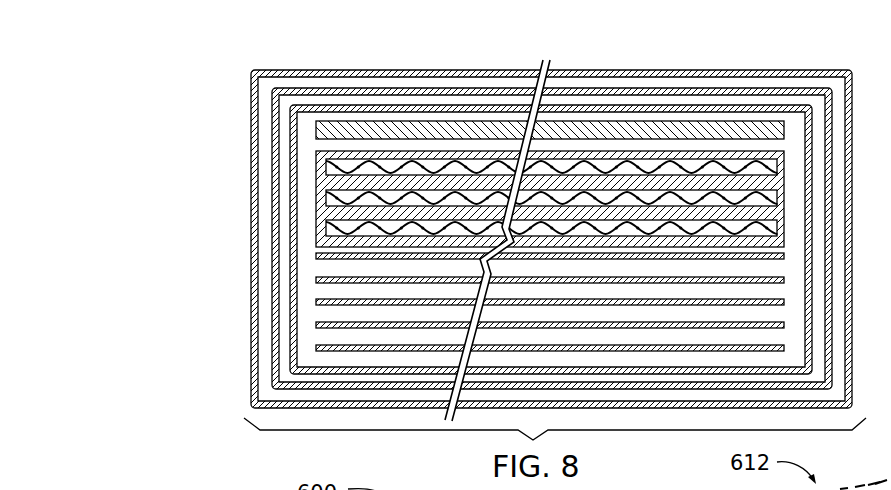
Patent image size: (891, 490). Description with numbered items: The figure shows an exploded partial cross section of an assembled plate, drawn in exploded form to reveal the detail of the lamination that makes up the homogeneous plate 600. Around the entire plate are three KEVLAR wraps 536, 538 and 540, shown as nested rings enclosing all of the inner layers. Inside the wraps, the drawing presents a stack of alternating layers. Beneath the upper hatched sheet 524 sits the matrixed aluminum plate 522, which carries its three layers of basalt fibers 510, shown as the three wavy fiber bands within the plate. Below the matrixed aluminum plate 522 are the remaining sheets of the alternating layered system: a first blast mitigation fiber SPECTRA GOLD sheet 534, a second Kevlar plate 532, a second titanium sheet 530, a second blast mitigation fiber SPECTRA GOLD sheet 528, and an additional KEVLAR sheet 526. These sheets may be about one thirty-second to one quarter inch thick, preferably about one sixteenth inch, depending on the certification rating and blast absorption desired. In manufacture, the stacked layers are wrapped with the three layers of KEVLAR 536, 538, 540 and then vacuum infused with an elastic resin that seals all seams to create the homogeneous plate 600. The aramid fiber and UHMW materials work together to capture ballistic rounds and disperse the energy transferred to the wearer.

The homogeneous plate 600 is at (502, 217).
The KEVLAR wrap 540 is at (487, 69).
The KEVLAR wrap 538 is at (423, 90).
The KEVLAR wrap 536 is at (398, 107).
The pre-preg layer 524 is at (315, 130).
The matrixed aluminum plate 522 is at (468, 167).
The layers of basalt fibers 510 is at (325, 222).
The first blast mitigation fiber SPECTRA GOLD sheet 534 is at (316, 256).
The second Kevlar plate 532 is at (316, 280).
The second titanium sheet 530 is at (316, 302).
The second blast mitigation fiber SPECTRA GOLD sheet 528 is at (316, 325).
The additional KEVLAR sheet 526 is at (316, 348).